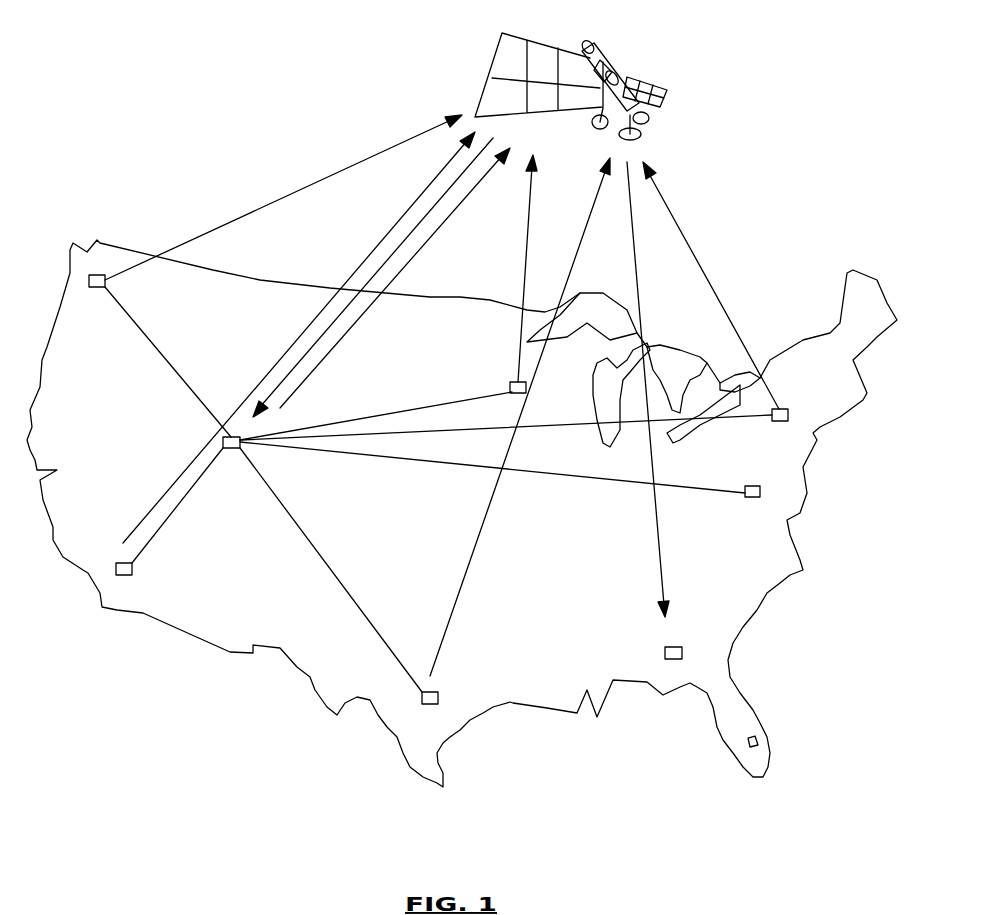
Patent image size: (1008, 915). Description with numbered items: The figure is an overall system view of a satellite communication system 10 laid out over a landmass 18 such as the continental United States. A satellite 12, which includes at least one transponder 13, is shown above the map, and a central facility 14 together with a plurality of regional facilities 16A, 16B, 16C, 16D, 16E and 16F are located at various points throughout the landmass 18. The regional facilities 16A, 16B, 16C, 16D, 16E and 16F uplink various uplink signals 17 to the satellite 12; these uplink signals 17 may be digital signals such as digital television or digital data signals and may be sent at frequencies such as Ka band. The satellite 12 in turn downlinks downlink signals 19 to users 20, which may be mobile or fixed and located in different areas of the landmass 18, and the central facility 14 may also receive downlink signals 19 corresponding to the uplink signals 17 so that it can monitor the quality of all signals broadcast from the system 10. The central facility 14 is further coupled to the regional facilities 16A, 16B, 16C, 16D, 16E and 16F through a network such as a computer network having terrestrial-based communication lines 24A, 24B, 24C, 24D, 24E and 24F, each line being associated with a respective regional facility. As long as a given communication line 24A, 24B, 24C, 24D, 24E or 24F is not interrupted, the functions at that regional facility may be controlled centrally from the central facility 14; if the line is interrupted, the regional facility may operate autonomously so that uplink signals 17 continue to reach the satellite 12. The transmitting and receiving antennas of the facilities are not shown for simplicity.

The communication system 10 is at (133, 160).
The satellite 12 is at (610, 62).
The transponder 13 is at (600, 65).
The central facility 14 is at (232, 449).
The regional facility 16A is at (97, 275).
The regional facility 16B is at (125, 576).
The regional facility 16C is at (515, 382).
The regional facility 16D is at (782, 409).
The regional facility 16E is at (752, 486).
The regional facility 16F is at (437, 694).
The uplink signals 17 is at (287, 195).
The landmass 18 is at (763, 722).
The downlink signals 19 is at (430, 208).
The users 20 is at (668, 647).
The communication line 24A is at (165, 352).
The communication line 24B is at (177, 505).
The communication line 24C is at (360, 420).
The communication line 24D is at (562, 423).
The communication line 24E is at (557, 477).
The communication line 24F is at (300, 537).